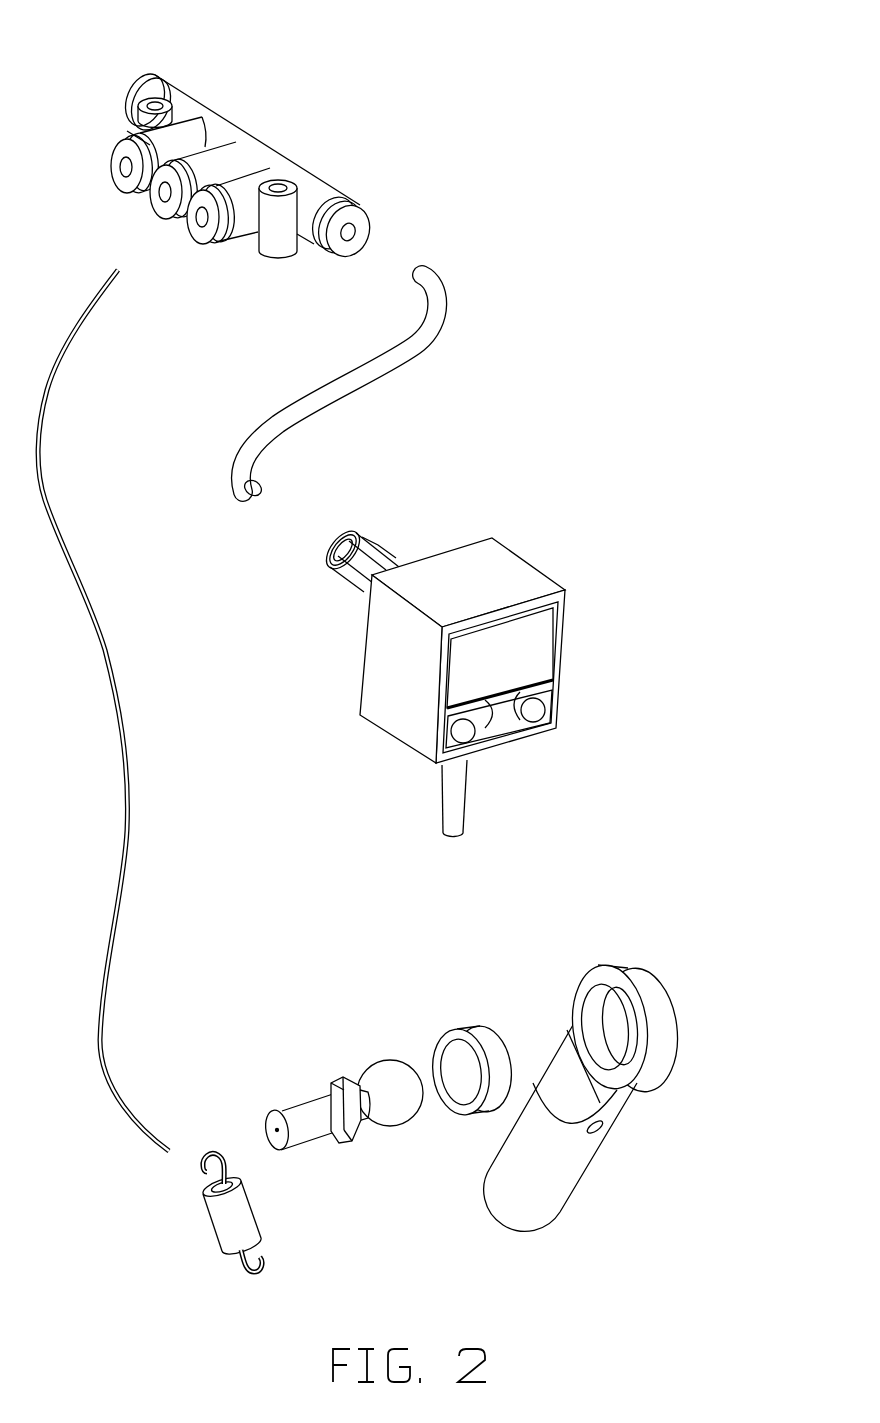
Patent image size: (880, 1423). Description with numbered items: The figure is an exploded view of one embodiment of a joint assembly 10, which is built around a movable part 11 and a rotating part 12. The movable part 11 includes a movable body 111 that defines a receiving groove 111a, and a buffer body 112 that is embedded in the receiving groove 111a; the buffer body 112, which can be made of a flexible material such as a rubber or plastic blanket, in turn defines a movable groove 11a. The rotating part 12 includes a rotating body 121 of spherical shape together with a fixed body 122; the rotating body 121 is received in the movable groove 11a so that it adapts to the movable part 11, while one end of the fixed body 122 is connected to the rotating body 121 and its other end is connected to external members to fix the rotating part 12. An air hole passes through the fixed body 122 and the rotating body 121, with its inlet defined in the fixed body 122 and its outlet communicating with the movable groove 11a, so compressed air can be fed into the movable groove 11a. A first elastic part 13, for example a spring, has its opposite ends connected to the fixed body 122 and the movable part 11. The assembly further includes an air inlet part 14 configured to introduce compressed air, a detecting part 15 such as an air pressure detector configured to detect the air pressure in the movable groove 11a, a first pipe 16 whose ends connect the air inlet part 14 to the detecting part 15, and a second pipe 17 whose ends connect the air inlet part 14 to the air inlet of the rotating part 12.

The joint assembly 10 is at (432, 34).
The movable part 11 is at (498, 907).
The movable groove 11a is at (462, 1080).
The movable body 111 is at (652, 997).
The receiving groove 111a is at (628, 1045).
The buffer body 112 is at (478, 1035).
The rotating part 12 is at (300, 1195).
The rotating body 121 is at (393, 1107).
The fixed body 122 is at (313, 1123).
The first elastic part 13 is at (230, 1222).
The air inlet part 14 is at (252, 153).
The detecting part 15 is at (500, 572).
The first pipe 16 is at (358, 375).
The second pipe 17 is at (57, 383).